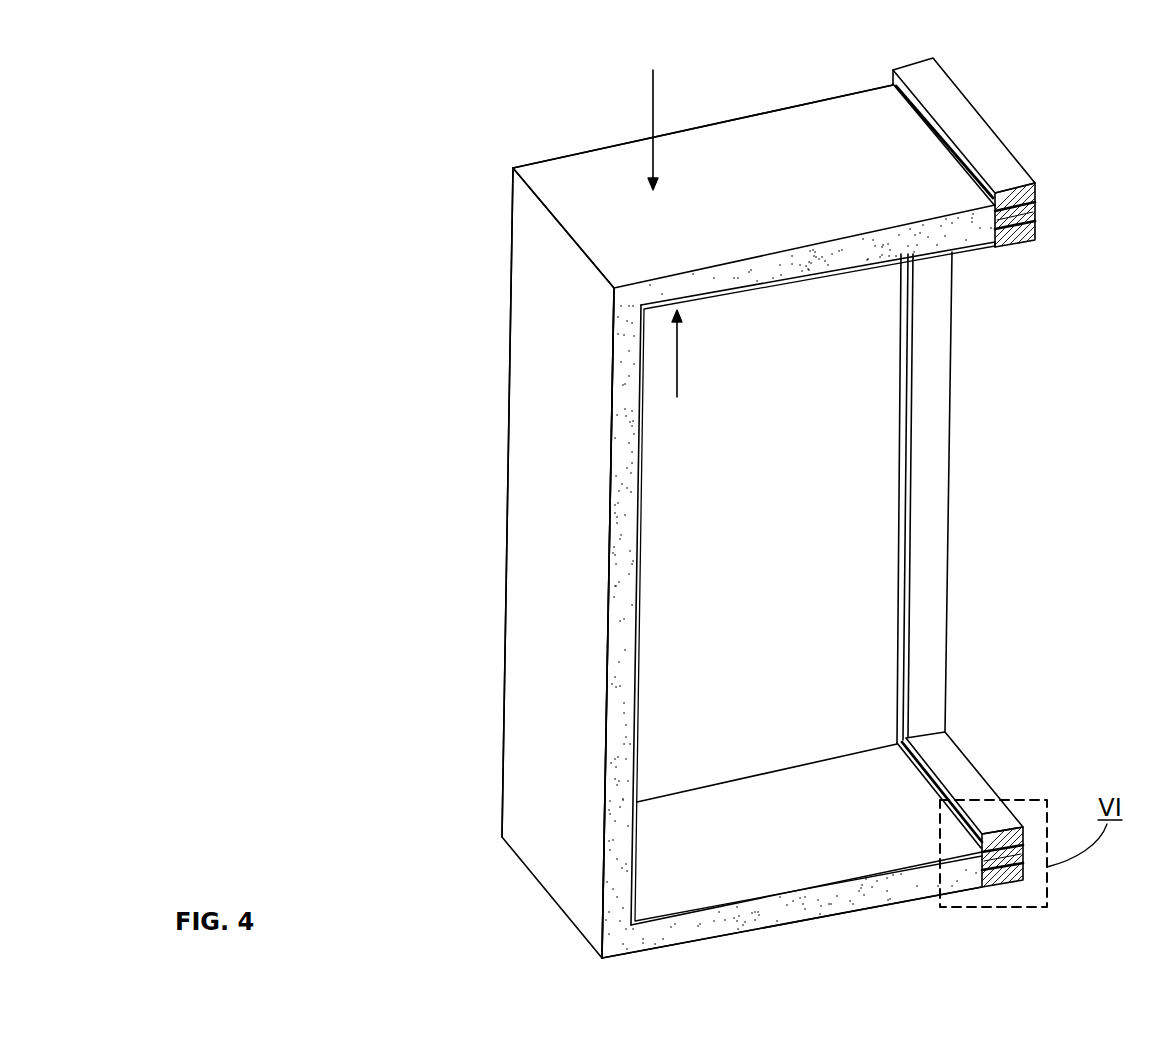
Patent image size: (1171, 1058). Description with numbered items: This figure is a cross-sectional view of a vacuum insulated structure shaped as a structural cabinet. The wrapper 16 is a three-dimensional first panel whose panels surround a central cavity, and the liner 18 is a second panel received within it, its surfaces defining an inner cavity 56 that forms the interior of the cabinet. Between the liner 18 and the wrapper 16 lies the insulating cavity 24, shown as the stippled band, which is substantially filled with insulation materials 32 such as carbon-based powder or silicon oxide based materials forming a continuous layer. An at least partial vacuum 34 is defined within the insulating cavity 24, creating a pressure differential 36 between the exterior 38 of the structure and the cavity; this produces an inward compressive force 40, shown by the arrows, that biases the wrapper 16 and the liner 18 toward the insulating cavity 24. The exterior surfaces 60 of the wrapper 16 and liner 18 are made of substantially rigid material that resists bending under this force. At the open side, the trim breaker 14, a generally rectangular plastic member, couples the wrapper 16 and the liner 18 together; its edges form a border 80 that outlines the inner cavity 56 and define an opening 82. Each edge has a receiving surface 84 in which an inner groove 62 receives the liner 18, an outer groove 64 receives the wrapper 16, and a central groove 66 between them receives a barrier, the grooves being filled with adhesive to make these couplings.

The trim breaker 14 is at (968, 122).
The wrapper 16 is at (734, 180).
The liner 18 is at (635, 583).
The insulating cavity 24 is at (624, 443).
The insulation materials 32 is at (613, 552).
The at least partial vacuum 34 is at (604, 652).
The pressure differential 36 is at (843, 240).
The exterior 38 is at (567, 183).
The inward compressive force 40 is at (653, 112).
The inner cavity 56 is at (856, 529).
The exterior surfaces 60 is at (792, 155).
The inner groove 62 is at (1037, 228).
The outer groove 64 is at (1033, 203).
The central groove 66 is at (1035, 215).
The border 80 is at (951, 429).
The opening 82 is at (819, 594).
The receiving surface 84 is at (983, 244).